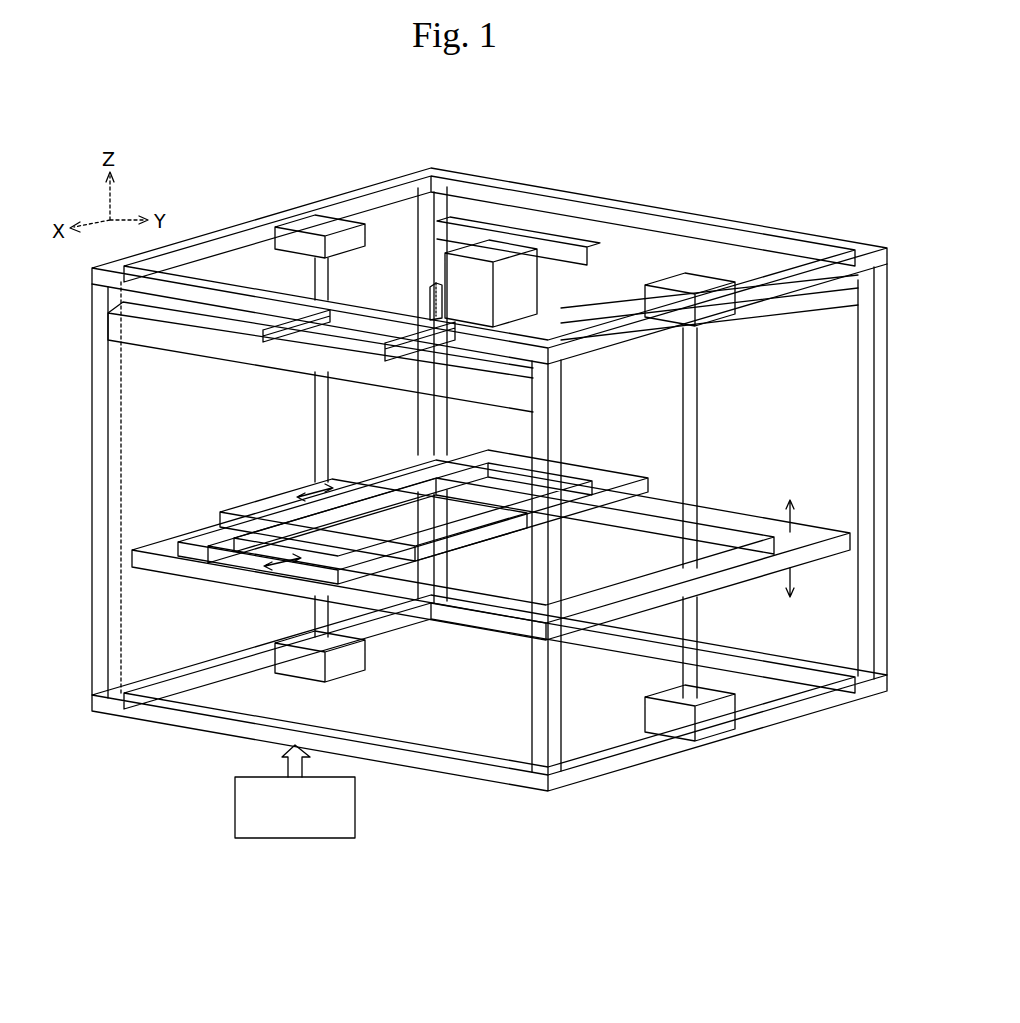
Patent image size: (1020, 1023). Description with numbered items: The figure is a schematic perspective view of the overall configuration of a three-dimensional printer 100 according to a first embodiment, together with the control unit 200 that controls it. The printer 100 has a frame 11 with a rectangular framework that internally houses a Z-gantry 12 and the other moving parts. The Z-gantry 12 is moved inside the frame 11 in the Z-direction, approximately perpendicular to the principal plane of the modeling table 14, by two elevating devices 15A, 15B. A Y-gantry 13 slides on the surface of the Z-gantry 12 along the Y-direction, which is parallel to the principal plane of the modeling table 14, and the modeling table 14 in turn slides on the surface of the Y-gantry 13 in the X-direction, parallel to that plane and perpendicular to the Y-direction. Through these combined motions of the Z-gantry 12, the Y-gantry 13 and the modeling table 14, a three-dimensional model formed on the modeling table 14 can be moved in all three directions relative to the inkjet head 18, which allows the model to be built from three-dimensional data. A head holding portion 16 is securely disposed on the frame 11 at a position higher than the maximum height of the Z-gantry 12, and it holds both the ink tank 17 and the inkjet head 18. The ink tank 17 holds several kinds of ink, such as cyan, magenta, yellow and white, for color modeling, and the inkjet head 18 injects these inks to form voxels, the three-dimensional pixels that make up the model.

The 3D printer 100 is at (642, 196).
The frame 11 is at (650, 750).
The Z-gantry 12 is at (730, 517).
The Y-gantry 13 is at (605, 478).
The modeling table 14 is at (279, 498).
The elevating device 15A is at (307, 218).
The elevating device 15B is at (710, 281).
The head holding portion 16 is at (125, 325).
The ink tank 17 is at (492, 251).
The inkjet head 18 is at (433, 303).
The control unit 200 is at (234, 807).